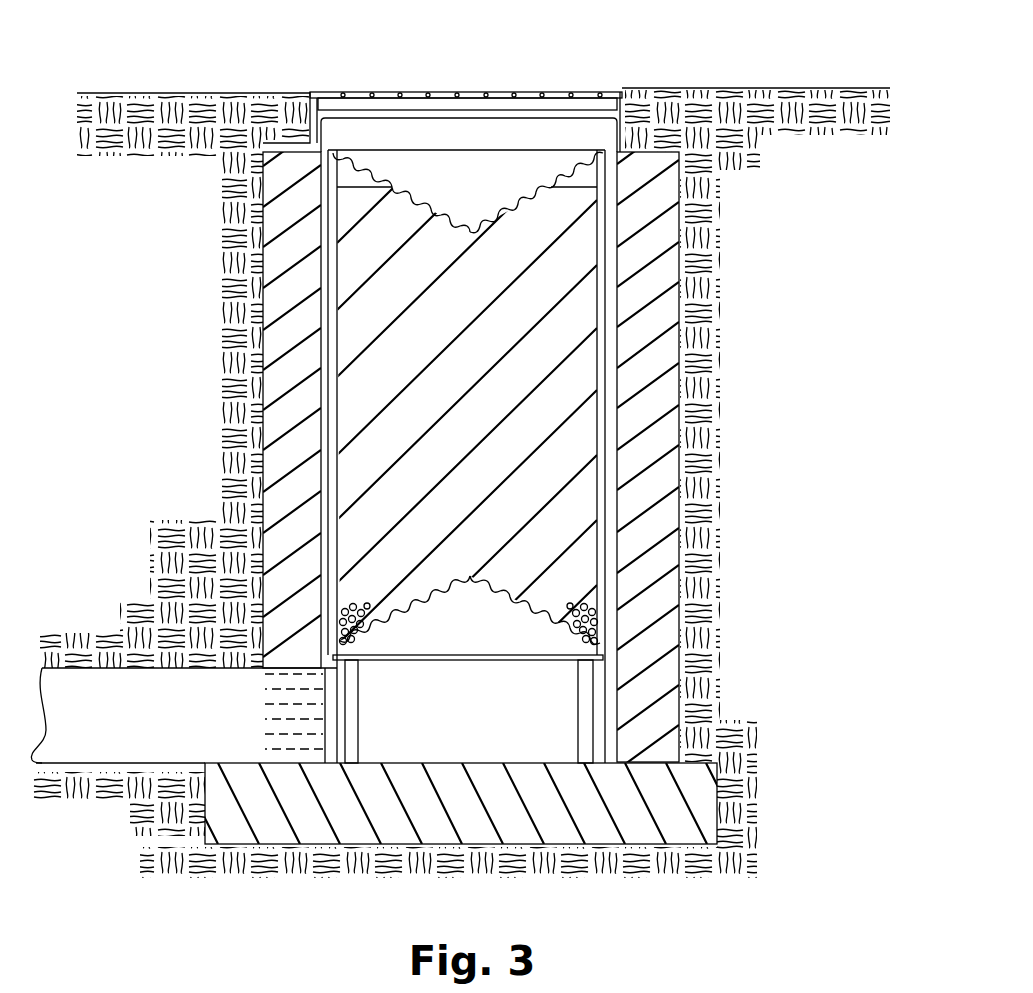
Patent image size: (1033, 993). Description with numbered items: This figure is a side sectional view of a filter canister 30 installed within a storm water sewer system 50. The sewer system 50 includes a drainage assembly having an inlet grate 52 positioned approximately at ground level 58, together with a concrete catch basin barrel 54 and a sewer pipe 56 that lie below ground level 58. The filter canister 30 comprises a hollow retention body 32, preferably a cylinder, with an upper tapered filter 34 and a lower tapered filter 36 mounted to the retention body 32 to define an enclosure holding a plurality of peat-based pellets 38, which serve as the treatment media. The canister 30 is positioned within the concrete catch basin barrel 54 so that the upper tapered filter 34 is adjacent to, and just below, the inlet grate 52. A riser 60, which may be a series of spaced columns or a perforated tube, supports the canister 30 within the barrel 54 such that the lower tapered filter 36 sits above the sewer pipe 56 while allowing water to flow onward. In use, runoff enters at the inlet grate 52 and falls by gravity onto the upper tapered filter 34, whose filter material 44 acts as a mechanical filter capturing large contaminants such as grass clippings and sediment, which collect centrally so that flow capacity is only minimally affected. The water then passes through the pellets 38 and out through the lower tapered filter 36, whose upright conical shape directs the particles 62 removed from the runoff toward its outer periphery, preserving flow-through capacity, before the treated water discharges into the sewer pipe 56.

The filter canister 30 is at (606, 437).
The retention body 32 is at (332, 373).
The upper tapered filter 34 is at (480, 162).
The lower tapered filter 36 is at (414, 706).
The peat-based pellets 38 is at (400, 413).
The filter material 44 is at (367, 172).
The storm water sewer system 50 is at (618, 58).
The inlet grate 52 is at (415, 80).
The concrete catch basin barrel 54 is at (657, 357).
The sewer pipe 56 is at (112, 745).
The ground level 58 is at (152, 93).
The riser 60 is at (608, 718).
The particles 62 is at (600, 618).